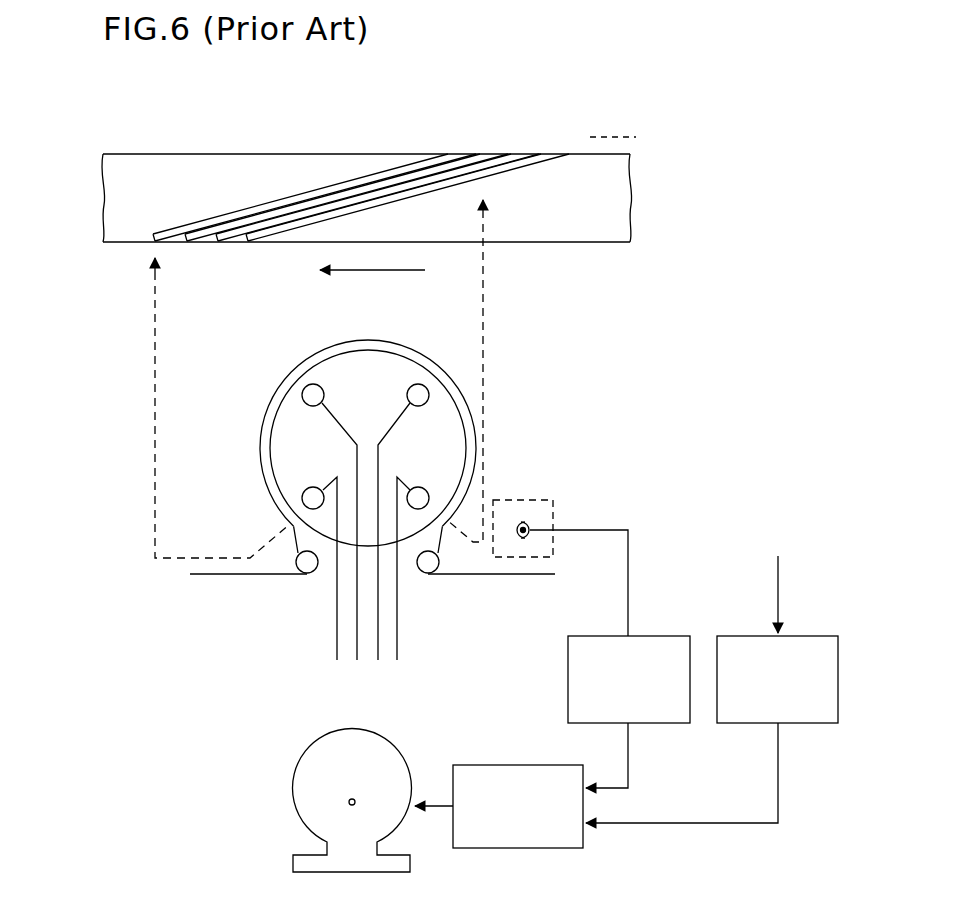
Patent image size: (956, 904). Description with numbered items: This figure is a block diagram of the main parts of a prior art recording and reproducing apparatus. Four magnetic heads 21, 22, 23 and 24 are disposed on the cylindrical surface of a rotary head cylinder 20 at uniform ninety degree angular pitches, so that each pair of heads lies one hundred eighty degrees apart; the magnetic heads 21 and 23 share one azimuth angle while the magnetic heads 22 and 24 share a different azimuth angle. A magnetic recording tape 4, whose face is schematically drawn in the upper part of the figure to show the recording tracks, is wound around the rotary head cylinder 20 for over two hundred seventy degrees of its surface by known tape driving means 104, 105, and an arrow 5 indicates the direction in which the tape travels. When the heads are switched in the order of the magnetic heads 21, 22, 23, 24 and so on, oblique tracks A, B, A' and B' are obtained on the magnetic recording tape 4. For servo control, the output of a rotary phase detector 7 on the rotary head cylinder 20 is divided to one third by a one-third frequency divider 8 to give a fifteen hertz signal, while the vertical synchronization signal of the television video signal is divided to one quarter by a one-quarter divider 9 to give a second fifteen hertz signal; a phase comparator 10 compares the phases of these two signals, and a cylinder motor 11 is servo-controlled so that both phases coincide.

The magnetic recording tape 4 is at (632, 201).
The tape running direction 5 is at (406, 272).
The rotary head cylinder 20 is at (447, 425).
The magnetic head 21 is at (418, 493).
The magnetic head 22 is at (415, 387).
The magnetic head 23 is at (320, 388).
The magnetic head 24 is at (310, 493).
The tape driving means 104 is at (307, 566).
The tape driving means 105 is at (427, 566).
The rotary phase detector 7 is at (535, 518).
The 1/3 frequency divider 8 is at (655, 636).
The 1/4 divider 9 is at (807, 636).
The phase comparator 10 is at (496, 765).
The cylinder motor 11 is at (390, 742).